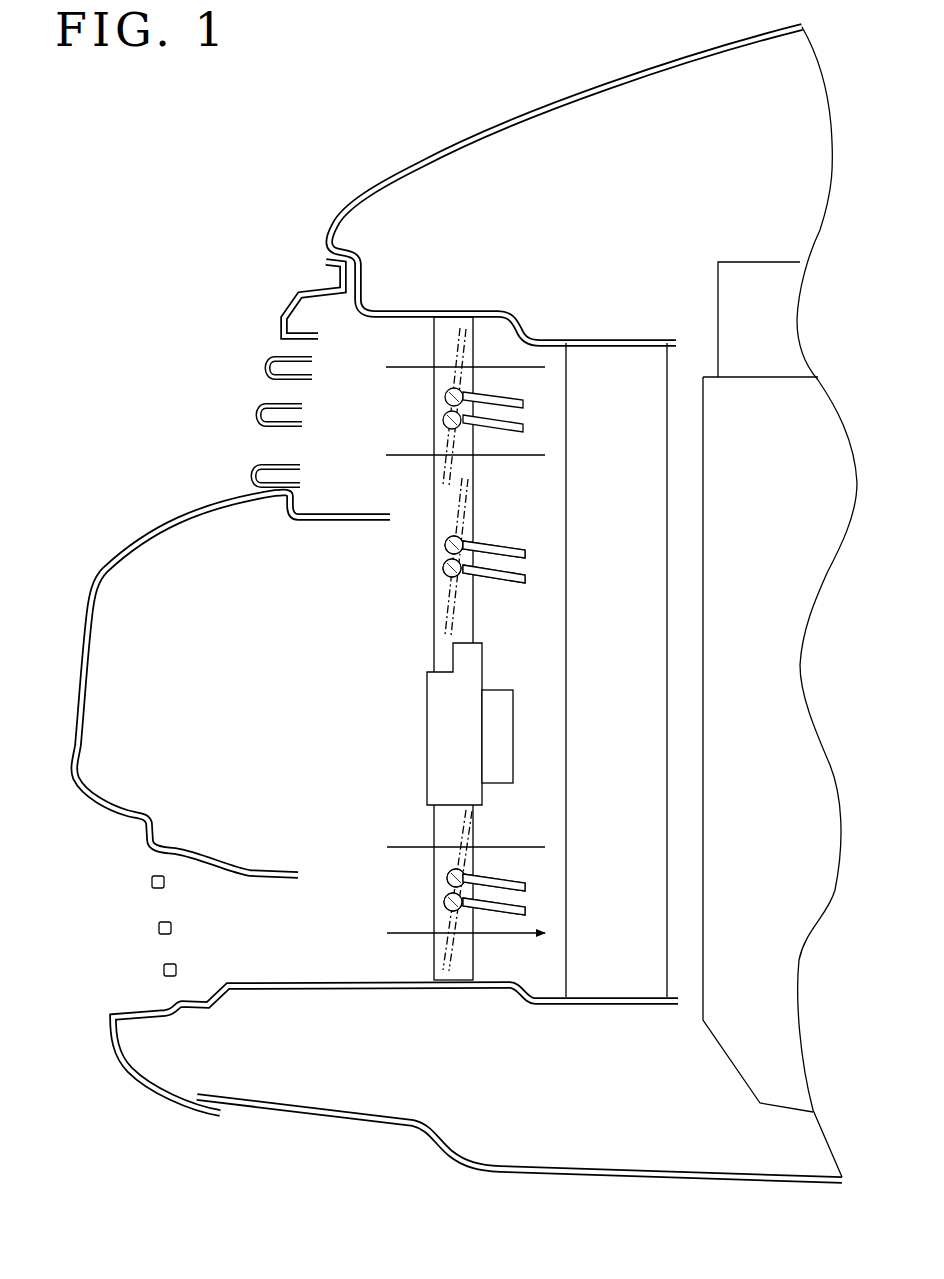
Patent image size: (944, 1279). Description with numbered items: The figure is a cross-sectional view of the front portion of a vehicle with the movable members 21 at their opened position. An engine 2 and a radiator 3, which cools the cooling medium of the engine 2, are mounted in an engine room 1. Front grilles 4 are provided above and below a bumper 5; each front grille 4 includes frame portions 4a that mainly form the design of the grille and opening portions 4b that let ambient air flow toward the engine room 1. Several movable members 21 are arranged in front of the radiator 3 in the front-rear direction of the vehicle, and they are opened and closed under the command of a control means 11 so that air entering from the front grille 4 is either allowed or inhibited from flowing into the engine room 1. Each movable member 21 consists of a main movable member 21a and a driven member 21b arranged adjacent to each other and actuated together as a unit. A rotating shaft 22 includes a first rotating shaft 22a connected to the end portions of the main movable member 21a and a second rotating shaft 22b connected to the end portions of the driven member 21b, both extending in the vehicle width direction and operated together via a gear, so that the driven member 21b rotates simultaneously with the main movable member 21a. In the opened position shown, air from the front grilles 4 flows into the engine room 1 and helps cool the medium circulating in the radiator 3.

The engine room 1 is at (648, 296).
The engine 2 is at (769, 270).
The radiator 3 is at (619, 987).
The front grille 4 is at (237, 663).
The frame portions 4a is at (270, 365).
The opening portions 4b is at (310, 351).
The bumper 5 is at (140, 530).
The control means 11 is at (506, 725).
The movable member 21 is at (530, 403).
The main movable member 21a is at (525, 555).
The driven member 21b is at (525, 580).
The rotating shaft 22 is at (450, 390).
The first rotating shaft 22a is at (445, 548).
The second rotating shaft 22b is at (443, 576).